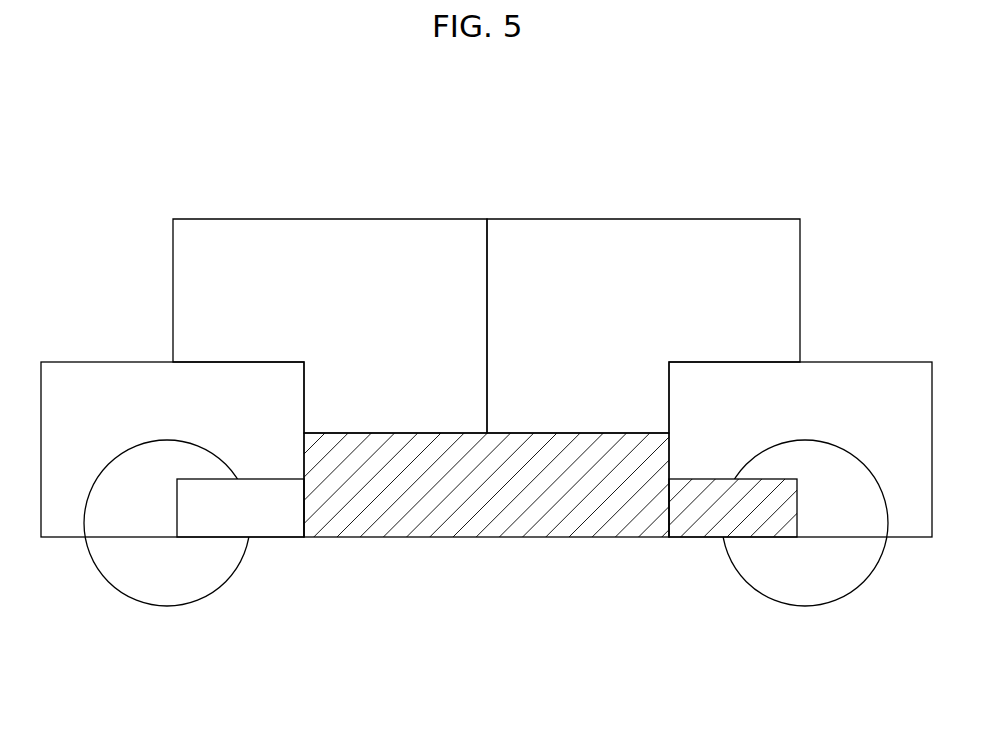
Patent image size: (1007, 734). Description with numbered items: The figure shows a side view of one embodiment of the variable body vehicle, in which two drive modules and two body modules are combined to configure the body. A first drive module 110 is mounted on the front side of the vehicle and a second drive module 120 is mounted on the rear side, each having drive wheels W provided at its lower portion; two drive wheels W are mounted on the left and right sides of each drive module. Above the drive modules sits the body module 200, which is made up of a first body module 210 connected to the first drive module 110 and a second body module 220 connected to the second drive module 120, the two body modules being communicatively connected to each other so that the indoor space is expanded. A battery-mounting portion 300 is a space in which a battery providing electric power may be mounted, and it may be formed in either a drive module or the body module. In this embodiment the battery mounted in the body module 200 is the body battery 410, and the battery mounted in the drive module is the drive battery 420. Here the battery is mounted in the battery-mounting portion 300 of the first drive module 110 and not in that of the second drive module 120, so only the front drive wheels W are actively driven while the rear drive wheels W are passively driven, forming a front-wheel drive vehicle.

The first drive module 110 is at (97, 378).
The second drive module 120 is at (862, 378).
The body module 200 is at (486, 255).
The first body module 210 is at (413, 236).
The second body module 220 is at (557, 236).
The battery-mounting portion 300 is at (275, 525).
The body battery 410 is at (495, 525).
The drive battery 420 is at (698, 527).
The drive wheels W is at (167, 607).